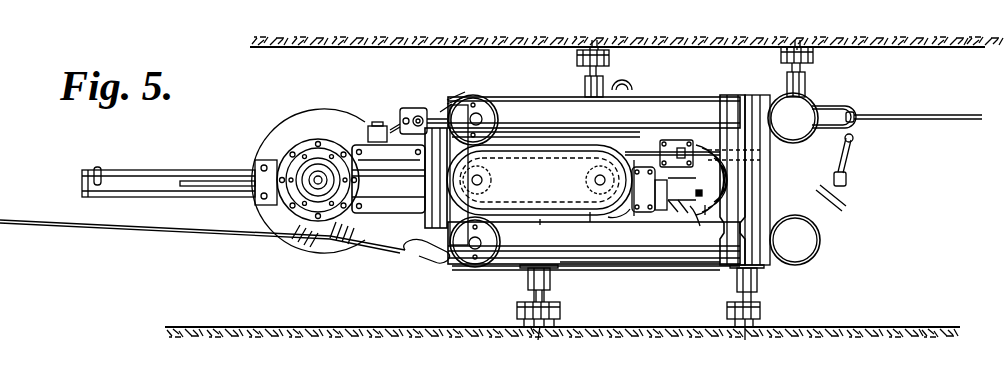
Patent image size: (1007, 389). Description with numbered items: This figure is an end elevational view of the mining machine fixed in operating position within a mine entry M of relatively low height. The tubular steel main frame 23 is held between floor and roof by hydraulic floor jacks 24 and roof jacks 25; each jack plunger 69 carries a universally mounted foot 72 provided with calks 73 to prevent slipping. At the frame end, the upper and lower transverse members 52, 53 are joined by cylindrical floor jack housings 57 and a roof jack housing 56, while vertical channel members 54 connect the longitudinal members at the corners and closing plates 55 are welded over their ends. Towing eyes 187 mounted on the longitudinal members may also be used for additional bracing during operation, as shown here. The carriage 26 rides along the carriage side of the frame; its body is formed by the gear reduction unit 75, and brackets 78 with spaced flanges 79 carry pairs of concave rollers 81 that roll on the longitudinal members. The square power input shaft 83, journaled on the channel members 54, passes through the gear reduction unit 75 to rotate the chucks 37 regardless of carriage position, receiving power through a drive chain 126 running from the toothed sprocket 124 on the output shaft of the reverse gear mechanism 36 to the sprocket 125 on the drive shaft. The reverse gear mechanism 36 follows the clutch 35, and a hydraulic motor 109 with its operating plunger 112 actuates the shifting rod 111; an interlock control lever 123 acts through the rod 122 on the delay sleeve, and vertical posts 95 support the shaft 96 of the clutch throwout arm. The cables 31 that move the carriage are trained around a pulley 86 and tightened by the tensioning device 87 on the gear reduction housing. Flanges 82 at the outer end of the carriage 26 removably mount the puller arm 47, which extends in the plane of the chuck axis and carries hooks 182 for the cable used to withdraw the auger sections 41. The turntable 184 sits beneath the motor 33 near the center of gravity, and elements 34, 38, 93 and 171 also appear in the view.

The main frame 23 is at (827, 253).
The floor jack 24 is at (568, 328).
The roof jack 25 is at (574, 61).
The carriage 26 is at (405, 222).
The cable 31 is at (419, 116).
The motor 33 is at (702, 193).
The clutch member 34 is at (702, 178).
The clutch 35 is at (680, 214).
The reverse gear mechanism 36 is at (635, 215).
The chuck 37 is at (318, 170).
The adjusting block 38 is at (384, 124).
The auger section 41 is at (324, 110).
The puller arm 47 is at (175, 173).
The upper transverse member 52 is at (690, 100).
The lower transverse member 53 is at (690, 268).
The vertical channel member 54 is at (462, 262).
The plate 55 is at (470, 104).
The roof jack housing 56 is at (622, 90).
The floor jack housing 57 is at (520, 268).
The plunger 69 is at (585, 86).
The foot 72 is at (610, 60).
The calk 73 is at (594, 44).
The gear reduction unit 75 is at (330, 234).
The bracket 78 is at (352, 238).
The flange 79 is at (420, 180).
The concave roller 81 is at (460, 143).
The flange 82 is at (275, 200).
The power input shaft 83 is at (498, 180).
The pulley 86 is at (445, 110).
The tensioning device 87 is at (406, 108).
The shifter lever 93 is at (688, 208).
The vertical post 95 is at (708, 210).
The shaft 96 is at (660, 212).
The hydraulic motor 109 is at (712, 150).
The shifting rod 111 is at (670, 140).
The operating plunger 112 is at (683, 148).
The rod 122 is at (712, 161).
The interlock control lever 123 is at (846, 208).
The toothed sprocket 124 is at (590, 215).
The sprocket 125 is at (515, 140).
The drive chain 126 is at (542, 218).
The hand lever 171 is at (846, 172).
The hook 182 is at (101, 172).
The turntable 184 is at (650, 266).
The towing eye 187 is at (420, 252).
The mine entry M is at (888, 326).